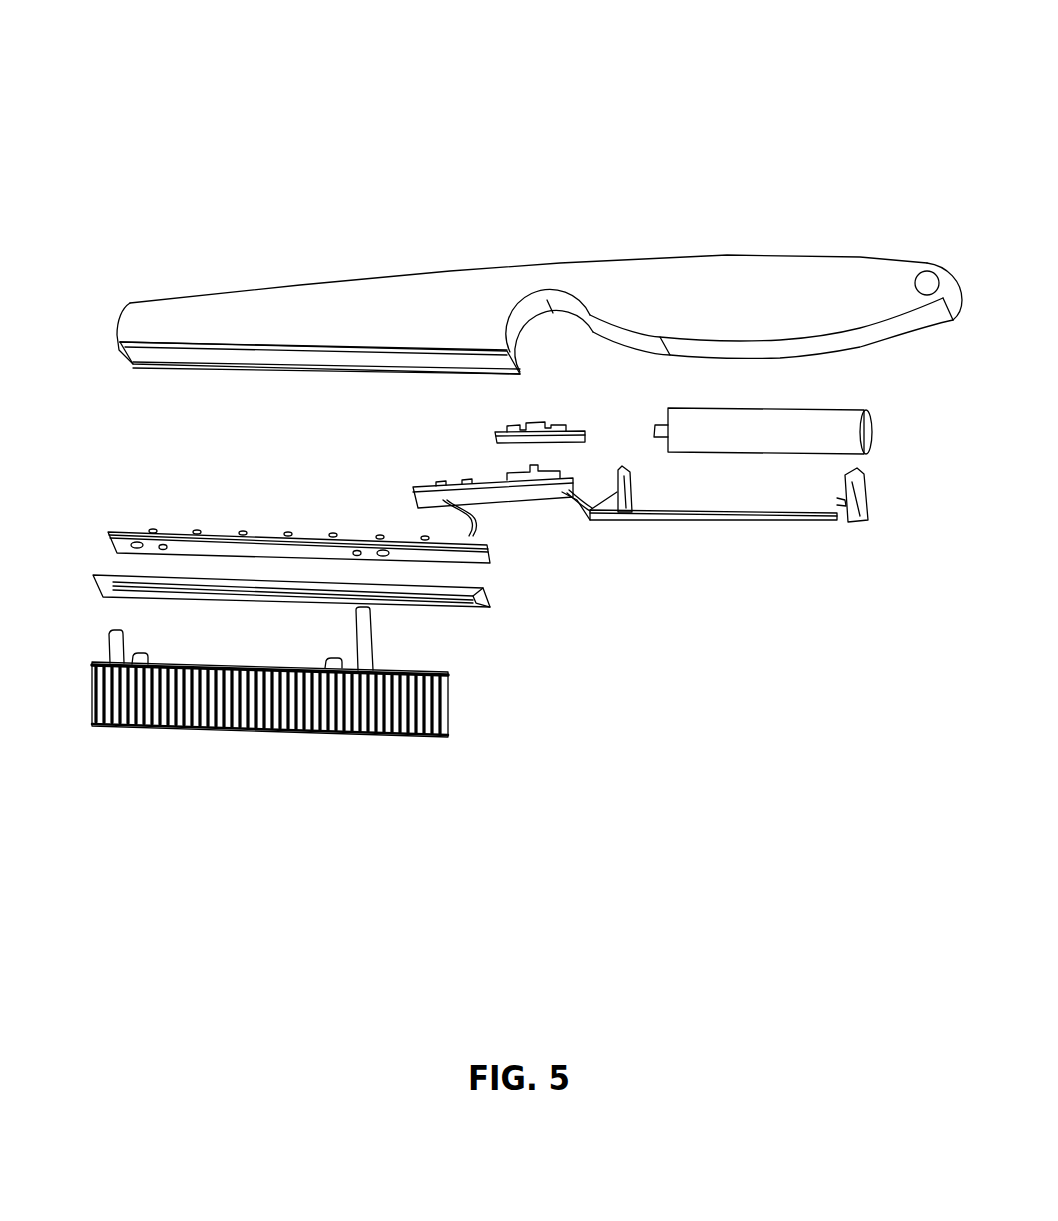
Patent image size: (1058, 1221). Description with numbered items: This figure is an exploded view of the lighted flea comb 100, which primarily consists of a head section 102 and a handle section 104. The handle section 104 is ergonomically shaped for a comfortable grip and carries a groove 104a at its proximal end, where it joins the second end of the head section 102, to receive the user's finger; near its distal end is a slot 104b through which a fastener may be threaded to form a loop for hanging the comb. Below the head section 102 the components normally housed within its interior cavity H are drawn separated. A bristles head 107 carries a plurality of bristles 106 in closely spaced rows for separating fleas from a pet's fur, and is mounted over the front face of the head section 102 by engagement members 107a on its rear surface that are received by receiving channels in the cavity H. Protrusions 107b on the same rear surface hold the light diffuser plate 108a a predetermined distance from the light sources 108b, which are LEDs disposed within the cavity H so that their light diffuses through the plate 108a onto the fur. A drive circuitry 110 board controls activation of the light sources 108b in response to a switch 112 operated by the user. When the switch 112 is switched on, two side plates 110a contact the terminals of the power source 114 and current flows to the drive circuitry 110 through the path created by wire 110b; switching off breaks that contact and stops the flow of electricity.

The flea comb 100 is at (789, 82).
The head section 102 is at (350, 279).
The handle section 104 is at (738, 256).
The groove 104a is at (553, 313).
The slot 104b is at (928, 280).
The interior cavity H is at (210, 352).
The bristles 106 is at (160, 732).
The bristles head 107 is at (450, 677).
The engagement members 107a is at (117, 657).
The protrusions 107b is at (143, 654).
The light diffuser plate 108a is at (483, 587).
The light sources 108b is at (153, 530).
The drive circuitry 110 is at (472, 473).
The side plates 110a is at (627, 482).
The wire 110b is at (584, 512).
The switch 112 is at (547, 420).
The power source 114 is at (843, 422).